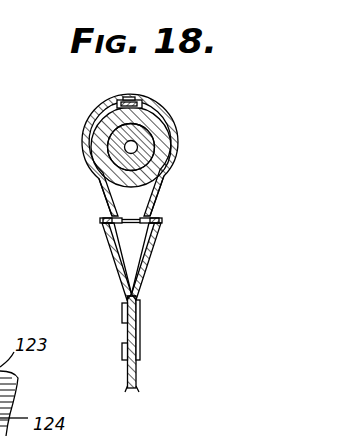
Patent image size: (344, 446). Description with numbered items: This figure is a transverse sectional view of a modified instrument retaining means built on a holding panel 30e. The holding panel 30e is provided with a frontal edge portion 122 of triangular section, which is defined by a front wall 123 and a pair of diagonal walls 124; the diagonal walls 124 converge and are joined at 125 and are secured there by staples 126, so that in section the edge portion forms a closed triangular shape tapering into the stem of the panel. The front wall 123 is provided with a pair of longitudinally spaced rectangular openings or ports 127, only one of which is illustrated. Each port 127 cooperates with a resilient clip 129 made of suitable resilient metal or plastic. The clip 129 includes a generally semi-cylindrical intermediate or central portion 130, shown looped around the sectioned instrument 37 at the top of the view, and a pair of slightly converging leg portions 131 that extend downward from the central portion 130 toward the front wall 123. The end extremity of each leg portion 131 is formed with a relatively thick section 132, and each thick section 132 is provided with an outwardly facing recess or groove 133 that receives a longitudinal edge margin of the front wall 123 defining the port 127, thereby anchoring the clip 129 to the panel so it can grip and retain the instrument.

The resilient clip 129 is at (168, 100).
The semi-cylindrical central portion 130 is at (118, 101).
The hatched roller 37 is at (91, 138).
The leg portion 131 is at (166, 183).
The thick section 132 is at (105, 216).
The front wall 123 is at (133, 218).
The groove 133 is at (101, 220).
The port 127 is at (162, 221).
The frontal edge portion 122 is at (110, 243).
The diagonal wall 124 is at (153, 246).
The joint 125 is at (137, 300).
The staple 126 is at (141, 327).
The holding panel 30e is at (145, 376).